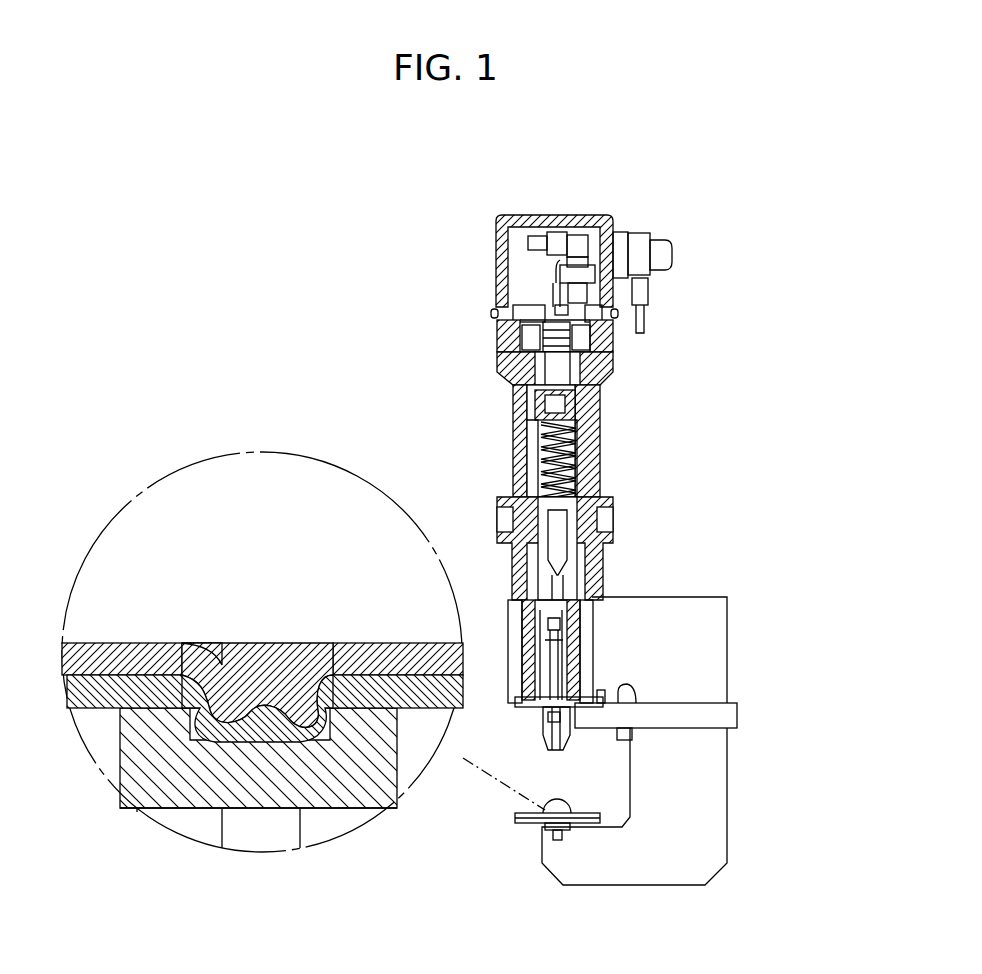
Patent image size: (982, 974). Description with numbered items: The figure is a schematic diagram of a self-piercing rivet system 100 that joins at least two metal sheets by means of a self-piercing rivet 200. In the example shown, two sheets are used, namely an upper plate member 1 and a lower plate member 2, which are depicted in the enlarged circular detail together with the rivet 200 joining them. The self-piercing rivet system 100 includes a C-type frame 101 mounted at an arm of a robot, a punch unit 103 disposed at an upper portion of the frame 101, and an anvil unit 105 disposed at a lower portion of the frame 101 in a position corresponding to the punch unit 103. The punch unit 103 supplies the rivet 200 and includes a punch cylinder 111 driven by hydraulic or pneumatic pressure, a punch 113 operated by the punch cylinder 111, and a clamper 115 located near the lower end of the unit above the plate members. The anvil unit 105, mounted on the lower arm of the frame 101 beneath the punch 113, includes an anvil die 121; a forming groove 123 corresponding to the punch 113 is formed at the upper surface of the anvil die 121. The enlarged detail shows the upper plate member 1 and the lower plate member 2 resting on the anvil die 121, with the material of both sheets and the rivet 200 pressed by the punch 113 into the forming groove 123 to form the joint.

The self-piercing rivet system 100 is at (373, 184).
The punch unit 103 is at (452, 312).
The punch cylinder 111 is at (514, 418).
The punch 113 is at (548, 672).
The clamper 115 is at (555, 738).
The C-type frame 101 is at (705, 660).
The anvil unit 105 is at (537, 840).
The anvil die 121 is at (127, 752).
The forming groove 123 is at (172, 643).
The self-piercing rivet 200 is at (354, 621).
The upper plate member 1 is at (101, 643).
The lower plate member 2 is at (385, 690).